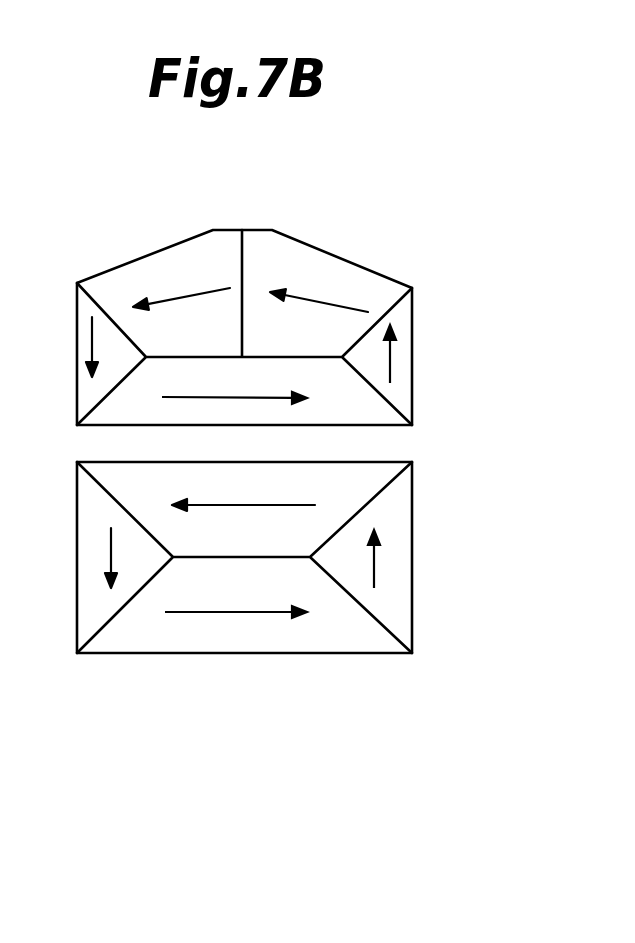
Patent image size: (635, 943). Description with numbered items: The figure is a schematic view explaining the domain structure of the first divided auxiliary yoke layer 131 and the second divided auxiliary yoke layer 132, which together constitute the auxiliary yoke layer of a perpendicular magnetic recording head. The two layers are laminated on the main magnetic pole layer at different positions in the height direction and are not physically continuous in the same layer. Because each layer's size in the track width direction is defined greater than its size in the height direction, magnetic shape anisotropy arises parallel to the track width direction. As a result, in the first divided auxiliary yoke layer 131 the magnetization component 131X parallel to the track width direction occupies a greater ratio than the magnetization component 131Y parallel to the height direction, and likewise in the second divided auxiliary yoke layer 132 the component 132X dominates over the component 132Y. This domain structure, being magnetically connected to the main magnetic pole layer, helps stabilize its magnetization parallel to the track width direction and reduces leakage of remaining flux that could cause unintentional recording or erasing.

The first divided auxiliary yoke layer 131 is at (327, 260).
The magnetization component parallel to the height direction 131Y is at (393, 362).
The magnetization component parallel to the track width direction 131X is at (253, 398).
The second divided auxiliary yoke layer 132 is at (380, 630).
The magnetization component parallel to the height direction 132Y is at (377, 558).
The magnetization component parallel to the track width direction 132X is at (240, 613).